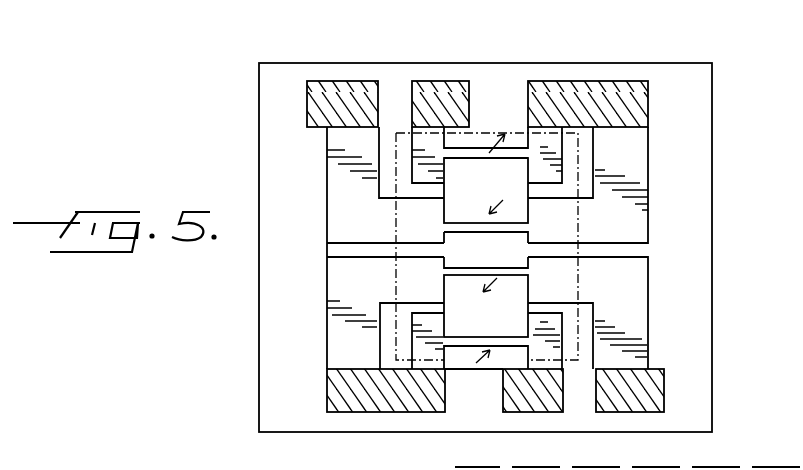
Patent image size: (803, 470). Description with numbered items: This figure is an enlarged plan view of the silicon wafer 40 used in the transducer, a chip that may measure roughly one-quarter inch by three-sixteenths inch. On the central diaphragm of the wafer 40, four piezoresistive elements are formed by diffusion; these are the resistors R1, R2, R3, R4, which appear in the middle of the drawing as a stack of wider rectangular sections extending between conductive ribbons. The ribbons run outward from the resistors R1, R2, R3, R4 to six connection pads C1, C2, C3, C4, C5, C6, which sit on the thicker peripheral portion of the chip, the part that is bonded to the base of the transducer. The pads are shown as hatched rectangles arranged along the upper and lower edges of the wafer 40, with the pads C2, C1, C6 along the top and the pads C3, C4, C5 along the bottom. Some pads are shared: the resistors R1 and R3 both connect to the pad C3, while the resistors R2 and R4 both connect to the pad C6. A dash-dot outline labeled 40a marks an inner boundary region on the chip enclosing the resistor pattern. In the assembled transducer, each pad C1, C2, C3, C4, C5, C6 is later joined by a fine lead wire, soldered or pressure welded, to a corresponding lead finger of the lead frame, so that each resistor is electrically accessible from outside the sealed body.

The wafer 40 is at (268, 335).
The resistive film layer boundary 40a is at (396, 215).
The connection pad C1 is at (450, 81).
The connection pad C2 is at (335, 81).
The connection pad C3 is at (375, 412).
The connection pad C4 is at (530, 412).
The connection pad C5 is at (637, 412).
The connection pad C6 is at (612, 81).
The piezoresistive element R1 is at (501, 279).
The piezoresistive element R2 is at (464, 160).
The piezoresistive element R3 is at (471, 349).
The piezoresistive element R4 is at (466, 233).